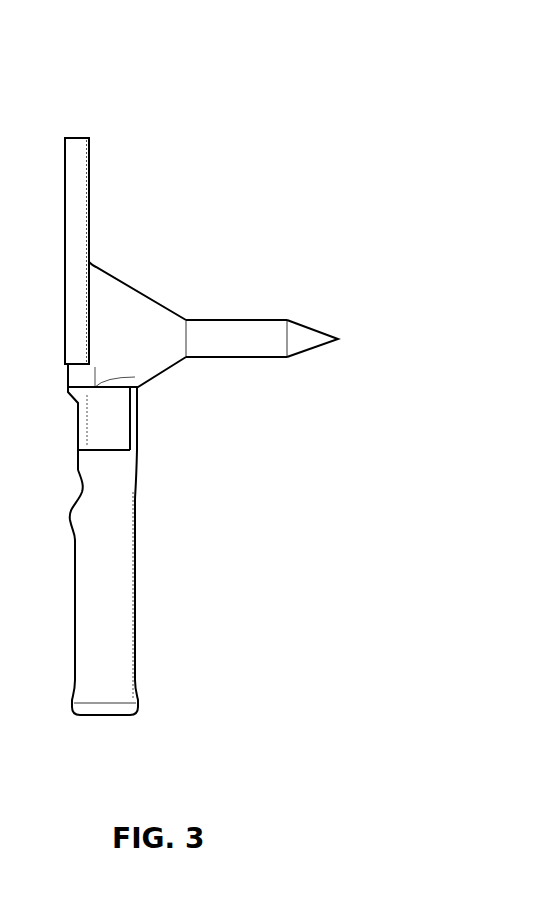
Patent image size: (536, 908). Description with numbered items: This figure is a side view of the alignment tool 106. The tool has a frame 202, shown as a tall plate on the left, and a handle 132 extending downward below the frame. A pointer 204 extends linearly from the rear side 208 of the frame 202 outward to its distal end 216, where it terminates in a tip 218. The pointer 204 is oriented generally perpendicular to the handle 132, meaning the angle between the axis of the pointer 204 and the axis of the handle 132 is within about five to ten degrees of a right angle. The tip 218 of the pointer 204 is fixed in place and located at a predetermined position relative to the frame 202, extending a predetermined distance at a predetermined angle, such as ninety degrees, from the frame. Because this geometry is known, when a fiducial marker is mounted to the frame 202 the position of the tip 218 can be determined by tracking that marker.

The alignment tool 106 is at (226, 128).
The frame 202 is at (77, 145).
The rear side 208 is at (89, 195).
The pointer 204 is at (257, 330).
The tip 218 is at (326, 334).
The distal end 216 is at (352, 338).
The handle 132 is at (120, 635).